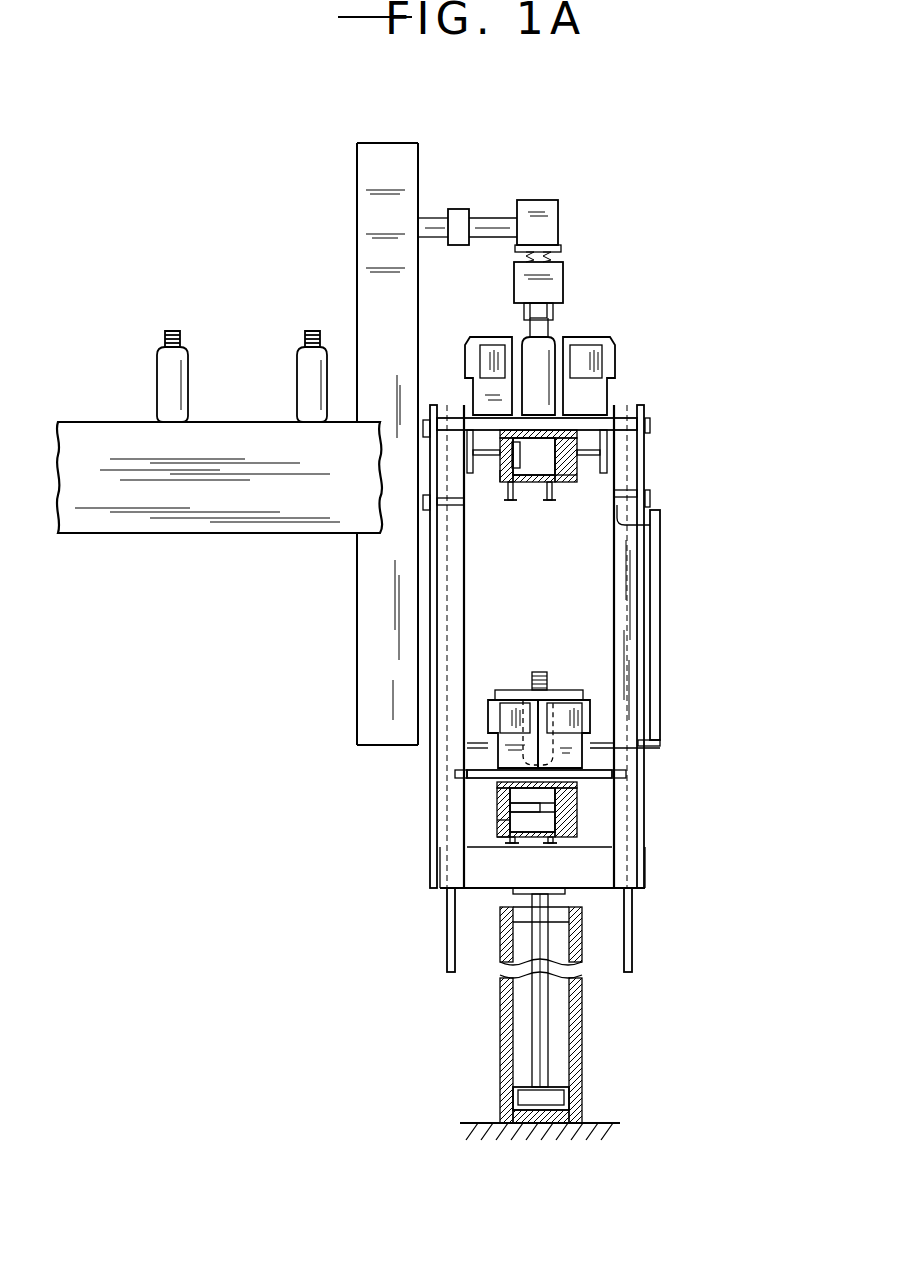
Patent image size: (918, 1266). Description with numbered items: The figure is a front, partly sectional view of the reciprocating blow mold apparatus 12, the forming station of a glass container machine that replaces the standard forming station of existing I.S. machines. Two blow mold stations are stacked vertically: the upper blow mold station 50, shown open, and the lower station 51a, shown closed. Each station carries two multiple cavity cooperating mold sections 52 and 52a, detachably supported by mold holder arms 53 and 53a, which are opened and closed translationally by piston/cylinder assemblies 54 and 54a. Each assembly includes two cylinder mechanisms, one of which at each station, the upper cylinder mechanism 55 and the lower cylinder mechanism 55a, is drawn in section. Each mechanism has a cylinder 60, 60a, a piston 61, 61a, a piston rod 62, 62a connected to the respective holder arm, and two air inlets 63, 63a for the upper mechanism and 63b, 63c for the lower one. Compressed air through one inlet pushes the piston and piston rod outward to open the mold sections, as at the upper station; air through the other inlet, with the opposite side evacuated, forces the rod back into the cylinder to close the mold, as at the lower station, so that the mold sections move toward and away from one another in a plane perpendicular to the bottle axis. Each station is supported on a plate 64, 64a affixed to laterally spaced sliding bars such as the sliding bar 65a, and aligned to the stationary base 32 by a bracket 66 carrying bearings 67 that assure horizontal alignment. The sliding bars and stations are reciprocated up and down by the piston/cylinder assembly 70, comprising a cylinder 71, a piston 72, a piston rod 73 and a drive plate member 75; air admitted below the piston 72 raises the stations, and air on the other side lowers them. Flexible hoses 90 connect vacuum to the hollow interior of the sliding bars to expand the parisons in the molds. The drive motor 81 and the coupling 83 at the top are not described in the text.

The reciprocating blow mold apparatus 12 is at (578, 266).
The stationary base 32 is at (425, 636).
The upper blow mold station 50 is at (564, 345).
The lower gripper assembly 51a is at (615, 695).
The mold sections 52 is at (482, 340).
The mold sections 52a is at (525, 690).
The mold holder arm 53 is at (485, 357).
The mold holder arm 53a is at (565, 690).
The piston/cylinder assembly 54 is at (567, 492).
The piston/cylinder assembly 54a is at (488, 843).
The upper cylinder mechanism 55 is at (605, 478).
The lower cylinder mechanism 55a is at (582, 805).
The cylinder 60 is at (575, 436).
The cylinder 60a is at (562, 835).
The piston 61 is at (530, 440).
The piston 61a is at (577, 815).
The piston rod 62 is at (500, 475).
The piston rod 62a is at (497, 826).
The air inlet 63 is at (550, 500).
The air inlet 63a is at (511, 500).
The air inlet 63b is at (514, 843).
The air inlet 63c is at (552, 843).
The plate 64 is at (472, 425).
The plate 64a is at (497, 800).
The sliding bar 65a is at (622, 776).
The bracket 66 is at (437, 580).
The bearings 67 is at (433, 490).
The piston/cylinder assembly 70 is at (514, 1008).
The cylinder 71 is at (575, 1055).
The piston 72 is at (520, 1100).
The piston rod 73 is at (546, 1000).
The drive plate member 75 is at (588, 895).
The drive motor 81 is at (562, 198).
The coupling 83 is at (458, 209).
The flexible hoses 90 is at (445, 935).